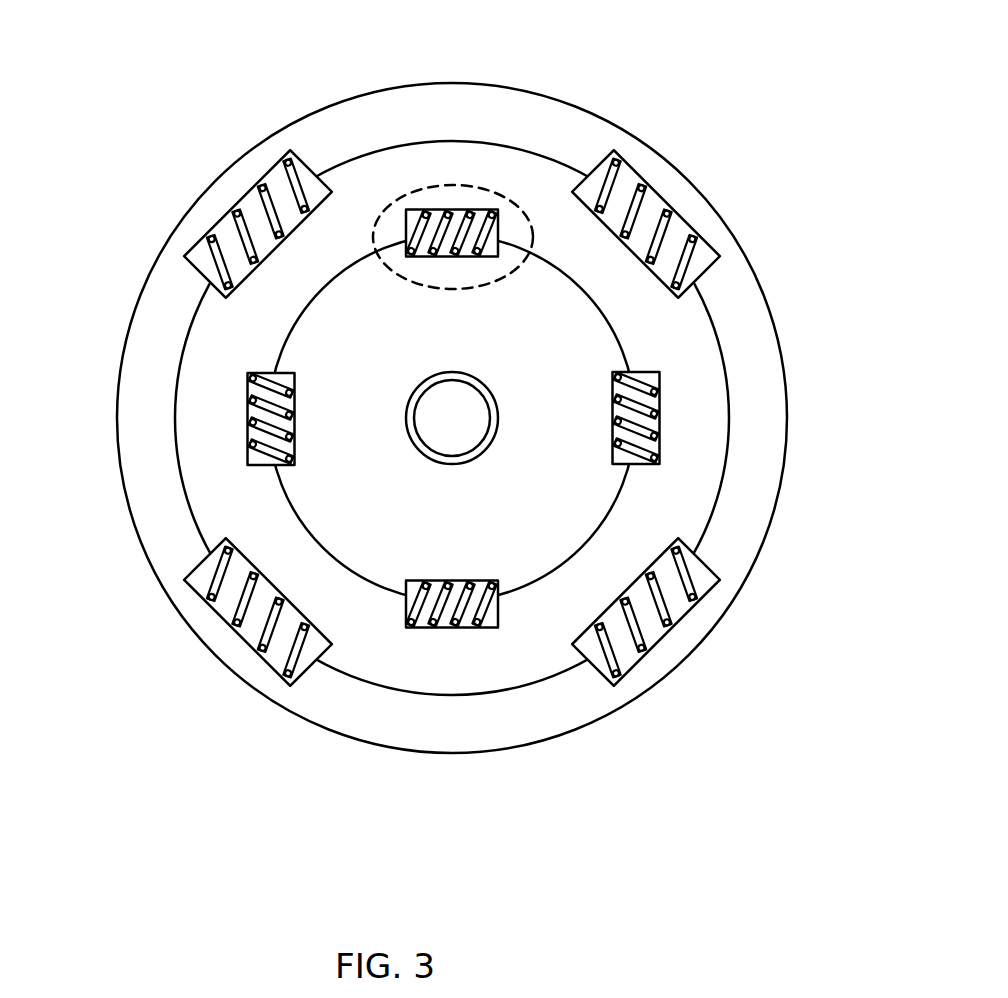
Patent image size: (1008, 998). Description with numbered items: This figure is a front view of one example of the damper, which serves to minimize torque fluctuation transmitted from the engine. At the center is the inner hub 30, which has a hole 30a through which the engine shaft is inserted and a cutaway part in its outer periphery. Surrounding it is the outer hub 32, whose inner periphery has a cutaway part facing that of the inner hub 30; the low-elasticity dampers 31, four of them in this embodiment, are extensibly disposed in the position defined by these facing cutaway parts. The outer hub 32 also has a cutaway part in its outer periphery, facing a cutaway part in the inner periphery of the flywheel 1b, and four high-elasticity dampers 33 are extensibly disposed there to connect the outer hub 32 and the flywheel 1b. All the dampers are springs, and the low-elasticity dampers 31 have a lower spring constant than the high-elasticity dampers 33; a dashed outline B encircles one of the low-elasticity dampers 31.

The flywheel 1b is at (775, 330).
The inner hub 30 is at (543, 462).
The hole 30a is at (477, 450).
The low-elasticity dampers 31 is at (428, 197).
The outer hub 32 is at (690, 470).
The high-elasticity dampers 33 is at (226, 178).
The region B is at (492, 187).